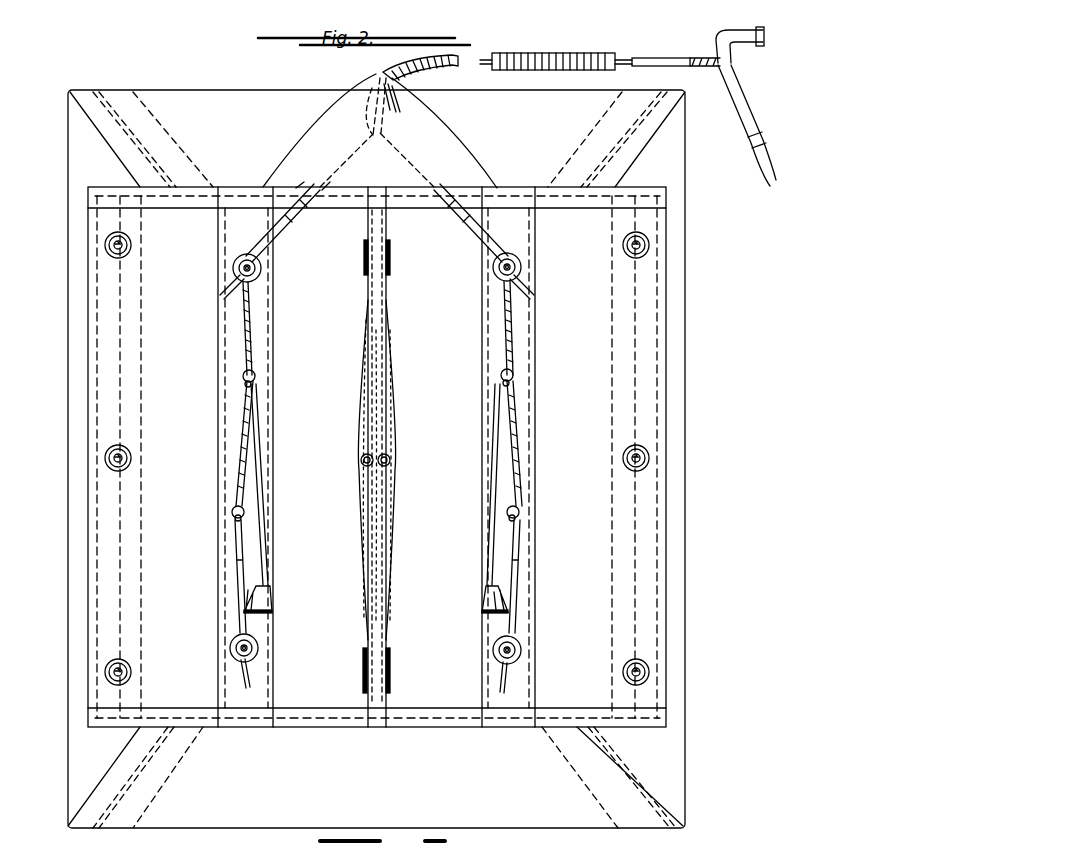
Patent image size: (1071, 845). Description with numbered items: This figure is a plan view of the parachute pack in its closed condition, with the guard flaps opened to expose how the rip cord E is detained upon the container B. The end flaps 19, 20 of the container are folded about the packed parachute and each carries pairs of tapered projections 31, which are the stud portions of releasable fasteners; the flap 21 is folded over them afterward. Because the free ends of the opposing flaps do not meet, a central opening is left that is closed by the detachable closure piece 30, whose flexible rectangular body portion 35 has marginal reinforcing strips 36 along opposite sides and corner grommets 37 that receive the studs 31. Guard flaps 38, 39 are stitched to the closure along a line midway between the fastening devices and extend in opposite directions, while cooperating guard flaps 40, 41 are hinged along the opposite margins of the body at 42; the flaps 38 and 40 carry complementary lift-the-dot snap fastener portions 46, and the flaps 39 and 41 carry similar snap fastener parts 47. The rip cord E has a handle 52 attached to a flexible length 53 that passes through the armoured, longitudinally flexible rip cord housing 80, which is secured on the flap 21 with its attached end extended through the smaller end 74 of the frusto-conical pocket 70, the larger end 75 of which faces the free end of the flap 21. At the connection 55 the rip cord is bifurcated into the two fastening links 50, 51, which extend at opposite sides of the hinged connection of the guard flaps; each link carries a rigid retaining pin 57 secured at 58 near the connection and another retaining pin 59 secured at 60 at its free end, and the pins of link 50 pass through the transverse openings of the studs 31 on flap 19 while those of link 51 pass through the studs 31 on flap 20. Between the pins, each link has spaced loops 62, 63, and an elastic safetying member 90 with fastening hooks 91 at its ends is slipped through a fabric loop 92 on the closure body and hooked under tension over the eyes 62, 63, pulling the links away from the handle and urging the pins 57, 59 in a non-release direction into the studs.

The end flap 19 is at (85, 152).
The end flap 20 is at (688, 183).
The flap 21 is at (545, 112).
The closure piece 30 is at (431, 701).
The tapered projections 31 is at (243, 268).
The body portion 35 is at (340, 700).
The marginal reinforcing strips 36 is at (252, 705).
The grommets 37 is at (238, 262).
The guard flap 38 is at (364, 330).
The guard flap 39 is at (392, 325).
The guard flap 40 is at (100, 575).
The guard flap 41 is at (648, 378).
The hinge connection 42 is at (545, 812).
The snap fastener portions 46 is at (131, 247).
The snap fastener parts 47 is at (632, 257).
The fastening link 50 is at (260, 313).
The fastening link 51 is at (498, 334).
The handle 52 is at (732, 118).
The rip cord length 53 is at (628, 60).
The connection 55 is at (385, 129).
The retaining pins 57 is at (222, 296).
The pin securement 58 is at (290, 238).
The retaining pins 59 is at (243, 682).
The pin securement 60 is at (238, 598).
The loop 62 is at (255, 374).
The loop 63 is at (244, 511).
The frusto-conical pocket 70 is at (440, 148).
The smaller pocket opening 74 is at (378, 75).
The larger pocket opening 75 is at (300, 186).
The rip cord housing 80 is at (560, 58).
The elastic safetying member 90 is at (262, 440).
The fastening hooks 91 is at (252, 385).
The fabric loops 92 is at (272, 606).
The container B is at (690, 268).
The rip cord E is at (688, 55).